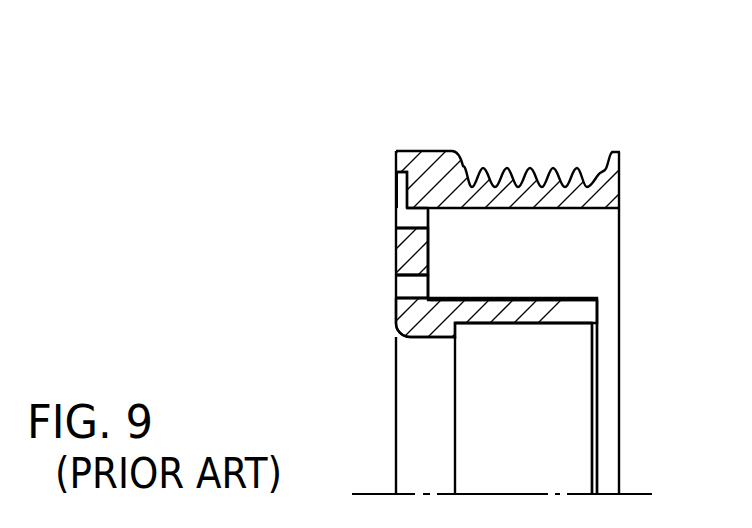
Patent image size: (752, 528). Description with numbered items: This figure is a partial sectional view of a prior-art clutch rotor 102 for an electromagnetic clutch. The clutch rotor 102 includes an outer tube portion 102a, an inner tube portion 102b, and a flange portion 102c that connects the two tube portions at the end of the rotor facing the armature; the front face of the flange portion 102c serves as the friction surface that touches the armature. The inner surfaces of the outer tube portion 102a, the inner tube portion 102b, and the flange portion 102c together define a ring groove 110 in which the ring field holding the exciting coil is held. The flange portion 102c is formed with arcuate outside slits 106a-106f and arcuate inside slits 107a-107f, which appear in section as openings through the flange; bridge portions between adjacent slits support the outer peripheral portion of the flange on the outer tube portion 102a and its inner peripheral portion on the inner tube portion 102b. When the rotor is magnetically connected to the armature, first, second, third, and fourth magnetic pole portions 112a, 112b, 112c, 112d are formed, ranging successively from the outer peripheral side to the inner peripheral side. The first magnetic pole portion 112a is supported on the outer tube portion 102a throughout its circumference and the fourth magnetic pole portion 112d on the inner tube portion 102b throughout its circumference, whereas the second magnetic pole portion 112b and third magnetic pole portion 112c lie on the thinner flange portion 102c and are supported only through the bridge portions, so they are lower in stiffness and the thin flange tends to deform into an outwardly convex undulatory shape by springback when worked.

The clutch rotor 102 is at (394, 142).
The outer tube portion 102a is at (621, 187).
The inner tube portion 102b is at (598, 312).
The flange portion 102c is at (431, 257).
The arcuate outside slits 106a-106f is at (412, 220).
The arcuate inside slits 107a-107f is at (403, 286).
The ring groove 110 is at (602, 265).
The first magnetic pole portion 112a is at (395, 158).
The second magnetic pole portion 112b is at (395, 240).
The third magnetic pole portion 112c is at (398, 276).
The fourth magnetic pole portion 112d is at (394, 313).